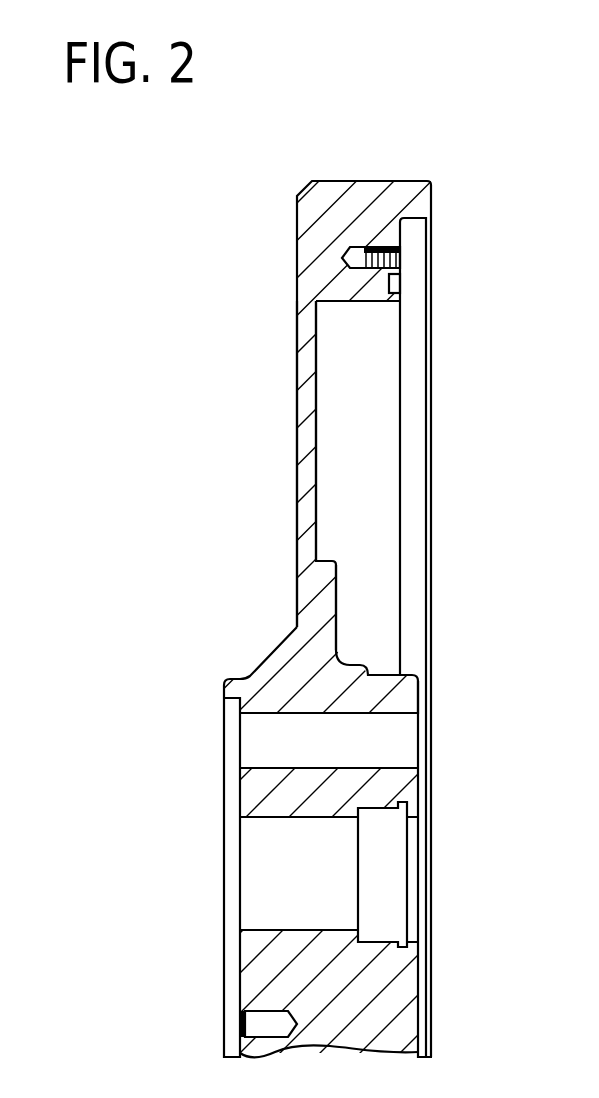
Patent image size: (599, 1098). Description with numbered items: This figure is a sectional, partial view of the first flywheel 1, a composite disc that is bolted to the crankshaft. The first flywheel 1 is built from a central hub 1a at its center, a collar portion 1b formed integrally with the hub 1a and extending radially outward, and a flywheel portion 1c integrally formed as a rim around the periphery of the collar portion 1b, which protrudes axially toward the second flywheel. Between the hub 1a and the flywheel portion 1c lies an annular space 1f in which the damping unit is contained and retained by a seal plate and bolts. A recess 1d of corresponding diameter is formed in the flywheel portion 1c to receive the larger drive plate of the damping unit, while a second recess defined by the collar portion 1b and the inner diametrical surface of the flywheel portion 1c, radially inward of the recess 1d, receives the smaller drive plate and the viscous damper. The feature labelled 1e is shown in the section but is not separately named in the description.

The first flywheel 1 is at (287, 486).
The central hub 1a is at (405, 695).
The collar portion 1b is at (307, 400).
The flywheel portion 1c is at (392, 187).
The recess 1d is at (400, 234).
The recess 1e is at (352, 301).
The space 1f is at (380, 442).